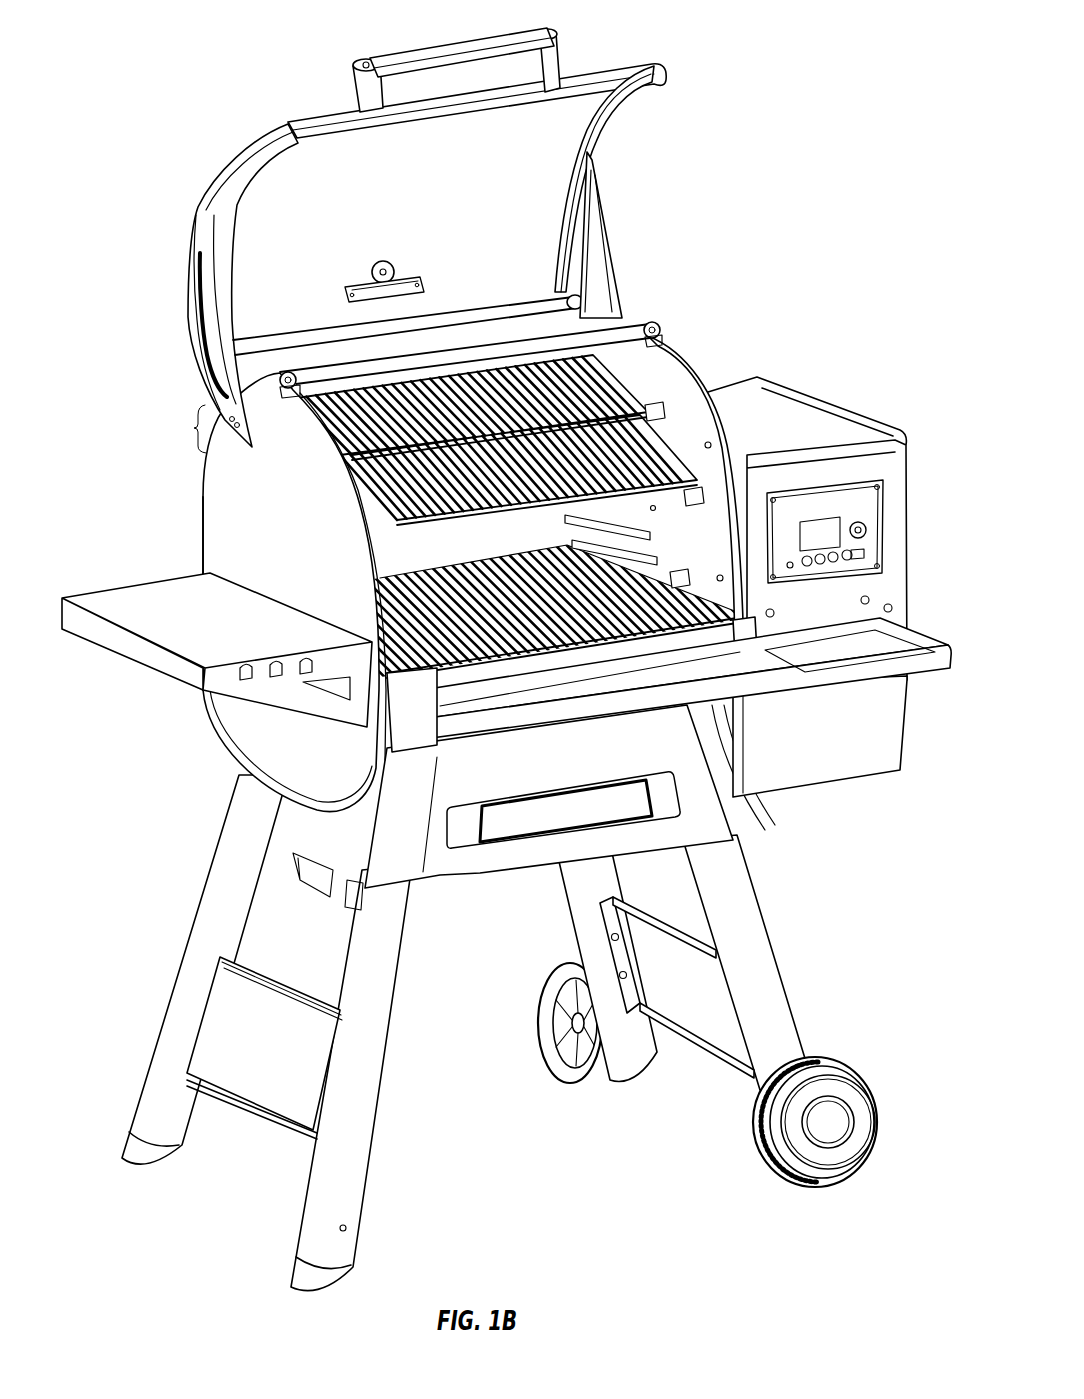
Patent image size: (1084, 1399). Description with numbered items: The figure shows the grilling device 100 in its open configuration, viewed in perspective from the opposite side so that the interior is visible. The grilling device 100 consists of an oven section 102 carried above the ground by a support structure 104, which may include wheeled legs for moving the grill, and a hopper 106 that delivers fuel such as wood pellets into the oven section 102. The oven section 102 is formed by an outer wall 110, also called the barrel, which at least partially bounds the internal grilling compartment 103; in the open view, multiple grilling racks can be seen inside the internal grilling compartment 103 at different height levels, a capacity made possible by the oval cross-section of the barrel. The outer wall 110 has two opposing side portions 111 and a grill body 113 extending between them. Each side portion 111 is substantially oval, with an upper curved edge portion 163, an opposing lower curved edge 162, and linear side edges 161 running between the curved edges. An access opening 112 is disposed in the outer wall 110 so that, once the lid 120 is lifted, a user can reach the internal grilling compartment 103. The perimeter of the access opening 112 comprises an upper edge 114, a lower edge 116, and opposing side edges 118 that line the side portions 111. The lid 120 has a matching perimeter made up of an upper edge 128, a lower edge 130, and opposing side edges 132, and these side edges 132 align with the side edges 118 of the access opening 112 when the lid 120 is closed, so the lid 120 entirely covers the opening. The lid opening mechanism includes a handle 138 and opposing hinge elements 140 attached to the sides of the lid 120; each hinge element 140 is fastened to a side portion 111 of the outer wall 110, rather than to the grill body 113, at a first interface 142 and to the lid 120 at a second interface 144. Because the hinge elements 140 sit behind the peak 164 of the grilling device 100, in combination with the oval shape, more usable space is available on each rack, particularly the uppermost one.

The grilling device 100 is at (196, 29).
The oven section 102 is at (497, 415).
The internal grilling compartment 103 is at (464, 551).
The support structure 104 is at (550, 943).
The hopper 106 is at (833, 528).
The outer wall 110 is at (475, 545).
The side portions 111 is at (473, 583).
The access opening 112 is at (657, 385).
The grill body 113 is at (700, 648).
The upper edge 114 is at (598, 330).
The lower edge 116 is at (769, 548).
The side edges 118 is at (372, 580).
The lid 120 is at (390, 226).
The upper edge 128 is at (480, 303).
The lower edge 130 is at (623, 77).
The side edges 132 is at (233, 157).
The handle 138 is at (508, 44).
The hinge elements 140 is at (192, 334).
The first interface 142 is at (194, 428).
The second interface 144 is at (180, 259).
The linear side edges 161 is at (203, 520).
The lower curved edge 162 is at (268, 797).
The upper curved edge portion 163 is at (268, 408).
The peak 164 is at (653, 324).